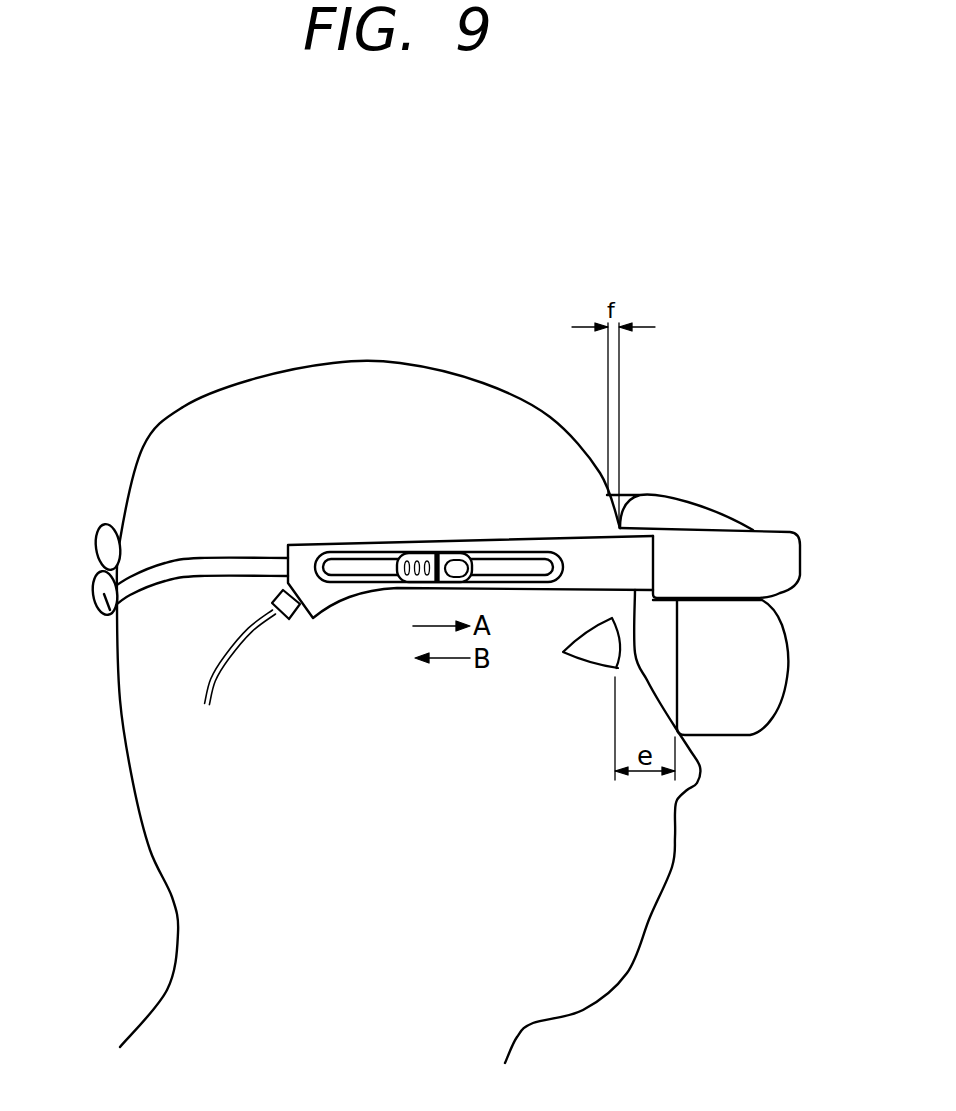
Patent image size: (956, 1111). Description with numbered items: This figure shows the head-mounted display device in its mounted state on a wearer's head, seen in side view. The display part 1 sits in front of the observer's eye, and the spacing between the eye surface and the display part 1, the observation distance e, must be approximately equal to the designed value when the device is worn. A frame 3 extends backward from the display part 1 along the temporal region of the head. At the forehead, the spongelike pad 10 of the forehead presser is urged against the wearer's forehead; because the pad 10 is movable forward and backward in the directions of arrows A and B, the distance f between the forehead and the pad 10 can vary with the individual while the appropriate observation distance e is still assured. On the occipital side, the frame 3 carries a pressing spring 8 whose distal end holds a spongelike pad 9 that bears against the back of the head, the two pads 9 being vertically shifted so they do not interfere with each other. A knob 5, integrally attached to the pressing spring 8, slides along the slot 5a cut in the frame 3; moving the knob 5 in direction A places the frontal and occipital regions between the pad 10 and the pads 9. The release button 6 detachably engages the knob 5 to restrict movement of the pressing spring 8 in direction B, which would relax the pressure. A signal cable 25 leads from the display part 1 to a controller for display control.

The display part 1 is at (773, 686).
The frame 3 is at (600, 555).
The knob 5 is at (437, 560).
The slide slot 5a is at (350, 565).
The release button 6 is at (455, 565).
The pressing spring 8 is at (187, 563).
The pad 9 is at (107, 537).
The pad 10 is at (623, 497).
The signal cable 25 is at (228, 658).